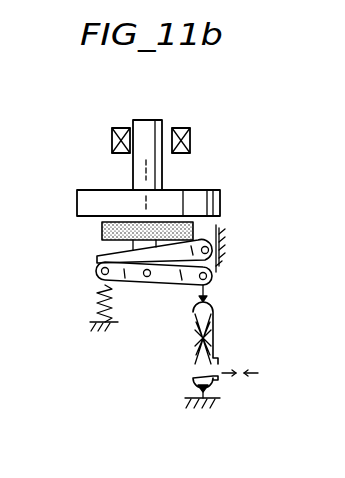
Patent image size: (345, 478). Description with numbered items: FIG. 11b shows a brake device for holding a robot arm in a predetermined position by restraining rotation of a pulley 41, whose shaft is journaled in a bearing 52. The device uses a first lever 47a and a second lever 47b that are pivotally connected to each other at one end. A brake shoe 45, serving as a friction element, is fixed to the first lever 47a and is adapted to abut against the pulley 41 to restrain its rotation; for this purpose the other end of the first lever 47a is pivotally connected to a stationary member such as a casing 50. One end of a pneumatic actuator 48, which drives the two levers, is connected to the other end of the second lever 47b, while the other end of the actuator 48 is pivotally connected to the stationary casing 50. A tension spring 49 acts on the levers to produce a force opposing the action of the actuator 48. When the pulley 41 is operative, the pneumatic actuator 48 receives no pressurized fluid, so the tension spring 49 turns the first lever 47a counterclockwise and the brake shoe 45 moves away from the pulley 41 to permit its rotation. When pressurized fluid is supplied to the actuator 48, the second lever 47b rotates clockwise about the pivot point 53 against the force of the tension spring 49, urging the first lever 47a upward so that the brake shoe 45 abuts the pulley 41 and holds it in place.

The pulley 41 is at (78, 190).
The bearing 52 is at (189, 129).
The brake shoe 45 is at (193, 236).
The first lever 47a is at (222, 265).
The second lever 47b is at (178, 287).
The pivot point 53 is at (143, 288).
The tension spring 49 is at (97, 305).
The pneumatic actuator 48 is at (213, 333).
The casing 50 is at (222, 243).